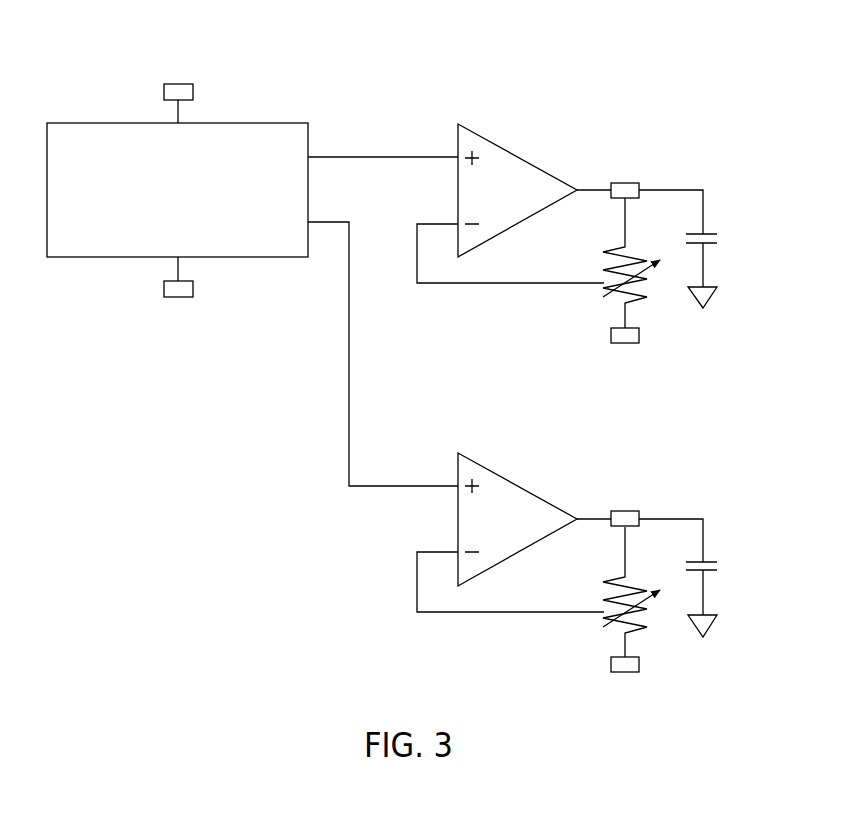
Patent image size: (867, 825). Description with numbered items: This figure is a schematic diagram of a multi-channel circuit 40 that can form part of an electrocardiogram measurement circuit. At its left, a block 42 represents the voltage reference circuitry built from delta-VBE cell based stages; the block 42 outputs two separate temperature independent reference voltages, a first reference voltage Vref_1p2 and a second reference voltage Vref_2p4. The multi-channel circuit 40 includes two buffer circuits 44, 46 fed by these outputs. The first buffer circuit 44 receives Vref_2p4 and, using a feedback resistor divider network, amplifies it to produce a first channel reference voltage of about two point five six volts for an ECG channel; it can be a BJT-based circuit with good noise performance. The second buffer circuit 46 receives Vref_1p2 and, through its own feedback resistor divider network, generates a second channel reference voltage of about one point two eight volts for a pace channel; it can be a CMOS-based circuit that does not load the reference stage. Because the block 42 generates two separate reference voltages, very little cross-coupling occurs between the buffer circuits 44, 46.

The multi-channel circuit 40 is at (672, 48).
The block 42 is at (233, 123).
The first buffer circuit 44 is at (517, 153).
The second buffer circuit 46 is at (517, 483).